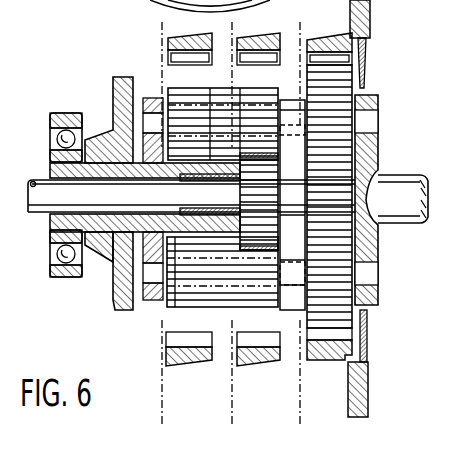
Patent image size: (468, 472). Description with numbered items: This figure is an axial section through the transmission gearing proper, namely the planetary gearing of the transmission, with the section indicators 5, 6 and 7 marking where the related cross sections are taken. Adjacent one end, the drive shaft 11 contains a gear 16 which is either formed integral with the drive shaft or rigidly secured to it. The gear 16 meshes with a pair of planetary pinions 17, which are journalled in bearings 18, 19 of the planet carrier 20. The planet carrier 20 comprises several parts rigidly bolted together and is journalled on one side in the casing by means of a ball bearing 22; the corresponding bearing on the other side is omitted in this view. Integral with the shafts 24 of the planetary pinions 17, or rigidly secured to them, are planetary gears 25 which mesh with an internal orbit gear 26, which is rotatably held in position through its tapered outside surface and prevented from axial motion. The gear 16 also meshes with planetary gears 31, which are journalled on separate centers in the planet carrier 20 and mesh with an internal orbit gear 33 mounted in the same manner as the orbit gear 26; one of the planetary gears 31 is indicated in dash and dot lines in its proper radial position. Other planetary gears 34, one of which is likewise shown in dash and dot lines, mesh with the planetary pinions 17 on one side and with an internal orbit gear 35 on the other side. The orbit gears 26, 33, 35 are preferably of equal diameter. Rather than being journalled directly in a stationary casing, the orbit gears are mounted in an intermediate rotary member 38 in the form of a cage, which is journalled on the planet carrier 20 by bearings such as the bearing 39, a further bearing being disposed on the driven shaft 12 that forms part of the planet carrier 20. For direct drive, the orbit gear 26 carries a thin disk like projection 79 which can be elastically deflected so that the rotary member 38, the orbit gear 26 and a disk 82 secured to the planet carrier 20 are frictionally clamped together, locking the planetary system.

The section line V-V 5 is at (185, 26).
The section line VI-VI 6 is at (255, 26).
The section line VII-VII 7 is at (321, 26).
The drive shaft 11 is at (40, 190).
The driven shaft 12 is at (410, 190).
The gear 16 is at (258, 185).
The planetary pinions 17 is at (213, 292).
The bearing 18 is at (153, 292).
The bearing 19 is at (368, 272).
The planet carrier 20 is at (50, 224).
The ball bearing 22 is at (73, 113).
The shafts of planetary pinions 24 is at (297, 123).
The planetary gears 25 is at (340, 85).
The internal orbit gear 26 is at (336, 360).
The planetary gears 31 is at (276, 40).
The internal orbit gear 33 is at (275, 350).
The planetary gears 34 is at (172, 80).
The internal orbit gear 35 is at (198, 350).
The intermediate rotary member 38 is at (118, 302).
The bearing 39 is at (112, 242).
The disk like projection 79 is at (352, 418).
The disk 82 is at (368, 400).